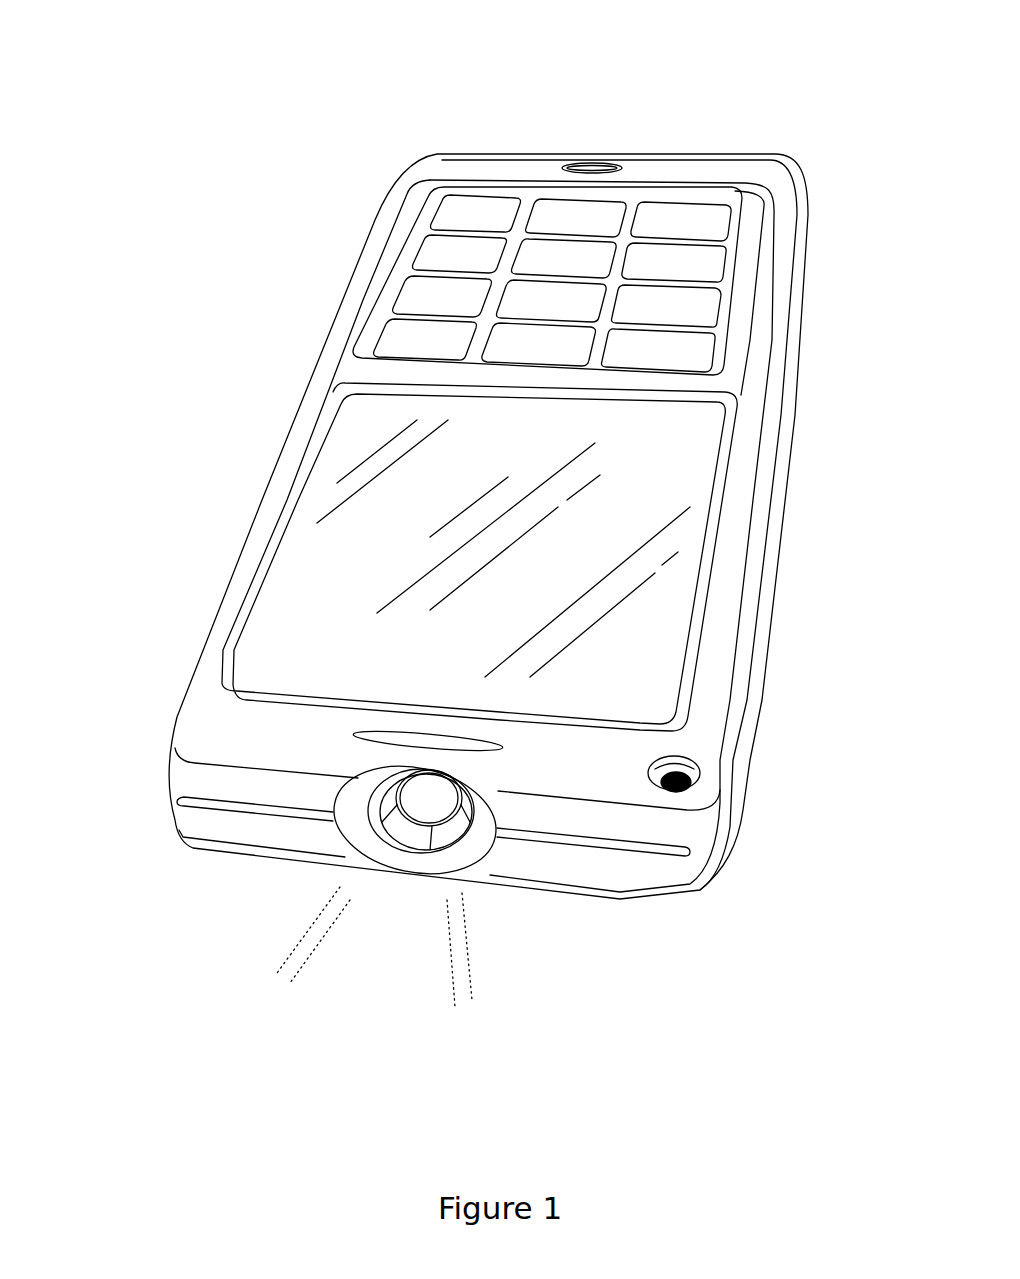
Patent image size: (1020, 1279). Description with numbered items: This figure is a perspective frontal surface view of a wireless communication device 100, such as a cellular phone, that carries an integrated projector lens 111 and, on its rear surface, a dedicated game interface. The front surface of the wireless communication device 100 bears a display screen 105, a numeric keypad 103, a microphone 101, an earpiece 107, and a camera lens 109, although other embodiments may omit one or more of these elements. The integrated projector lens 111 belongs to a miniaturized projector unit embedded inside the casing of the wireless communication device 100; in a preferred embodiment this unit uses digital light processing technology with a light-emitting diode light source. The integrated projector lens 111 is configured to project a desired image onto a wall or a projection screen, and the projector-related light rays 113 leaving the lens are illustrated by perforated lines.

The wireless communication device 100 is at (463, 1146).
The microphone 101 is at (597, 155).
The numeric keypad 103 is at (437, 226).
The display screen 105 is at (300, 593).
The earpiece 107 is at (345, 740).
The camera lens 109 is at (700, 752).
The integrated projector lens 111 is at (366, 833).
The projector-related light rays 113 is at (493, 982).